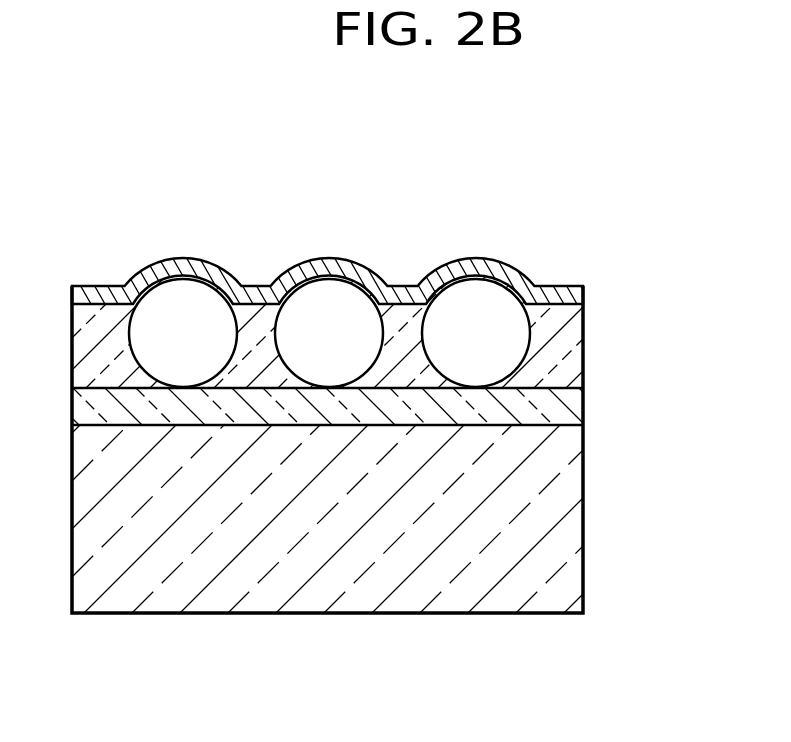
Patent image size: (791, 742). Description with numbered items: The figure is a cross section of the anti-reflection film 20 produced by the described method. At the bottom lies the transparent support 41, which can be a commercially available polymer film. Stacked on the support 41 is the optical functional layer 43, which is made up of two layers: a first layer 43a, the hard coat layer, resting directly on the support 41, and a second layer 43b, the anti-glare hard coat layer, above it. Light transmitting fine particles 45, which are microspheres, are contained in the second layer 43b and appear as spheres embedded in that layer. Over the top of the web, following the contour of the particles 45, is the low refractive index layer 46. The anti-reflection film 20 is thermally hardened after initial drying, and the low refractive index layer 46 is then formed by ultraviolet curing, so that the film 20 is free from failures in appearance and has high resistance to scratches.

The anti-reflection film 20 is at (561, 178).
The transparent support 41 is at (570, 535).
The optical functional layer 43 is at (406, 337).
The first layer 43a is at (572, 406).
The second layer 43b is at (560, 343).
The light transmitting fine particles 45 is at (184, 315).
The low refractive index layer 46 is at (585, 296).